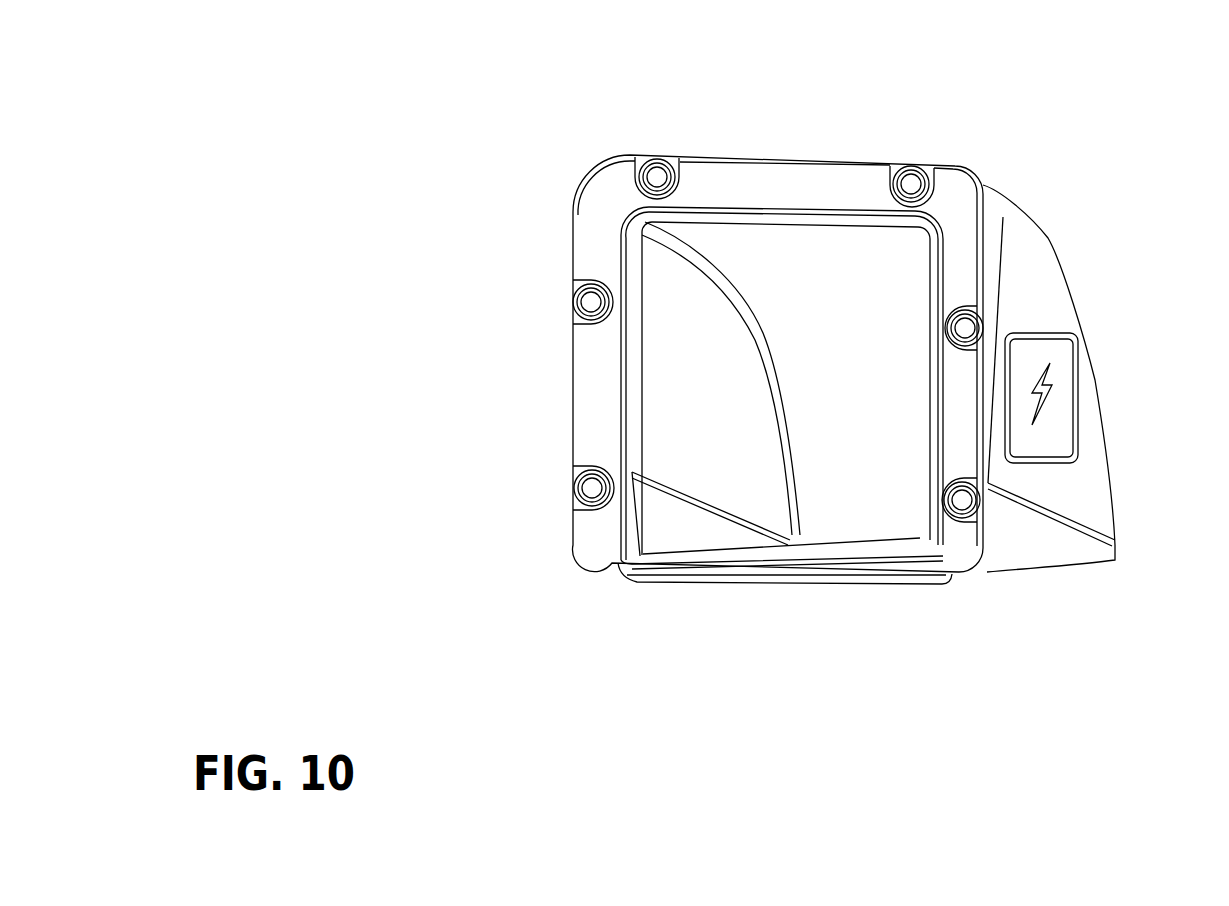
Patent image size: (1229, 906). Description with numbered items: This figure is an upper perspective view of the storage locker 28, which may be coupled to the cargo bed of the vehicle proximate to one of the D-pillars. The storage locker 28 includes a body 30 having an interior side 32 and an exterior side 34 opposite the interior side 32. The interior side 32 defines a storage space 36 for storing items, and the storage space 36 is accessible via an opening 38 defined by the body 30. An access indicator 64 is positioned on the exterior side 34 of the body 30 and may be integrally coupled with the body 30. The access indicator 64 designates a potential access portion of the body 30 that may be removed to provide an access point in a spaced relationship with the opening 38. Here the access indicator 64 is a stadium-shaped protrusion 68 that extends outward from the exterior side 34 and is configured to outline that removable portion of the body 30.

The storage locker 28 is at (935, 118).
The body 30 is at (1040, 270).
The interior side 32 is at (682, 360).
The exterior side 34 is at (1050, 296).
The storage space 36 is at (832, 293).
The opening 38 is at (731, 243).
The access indicator 64 is at (1072, 417).
The stadium-shaped protrusion 68 is at (1073, 372).